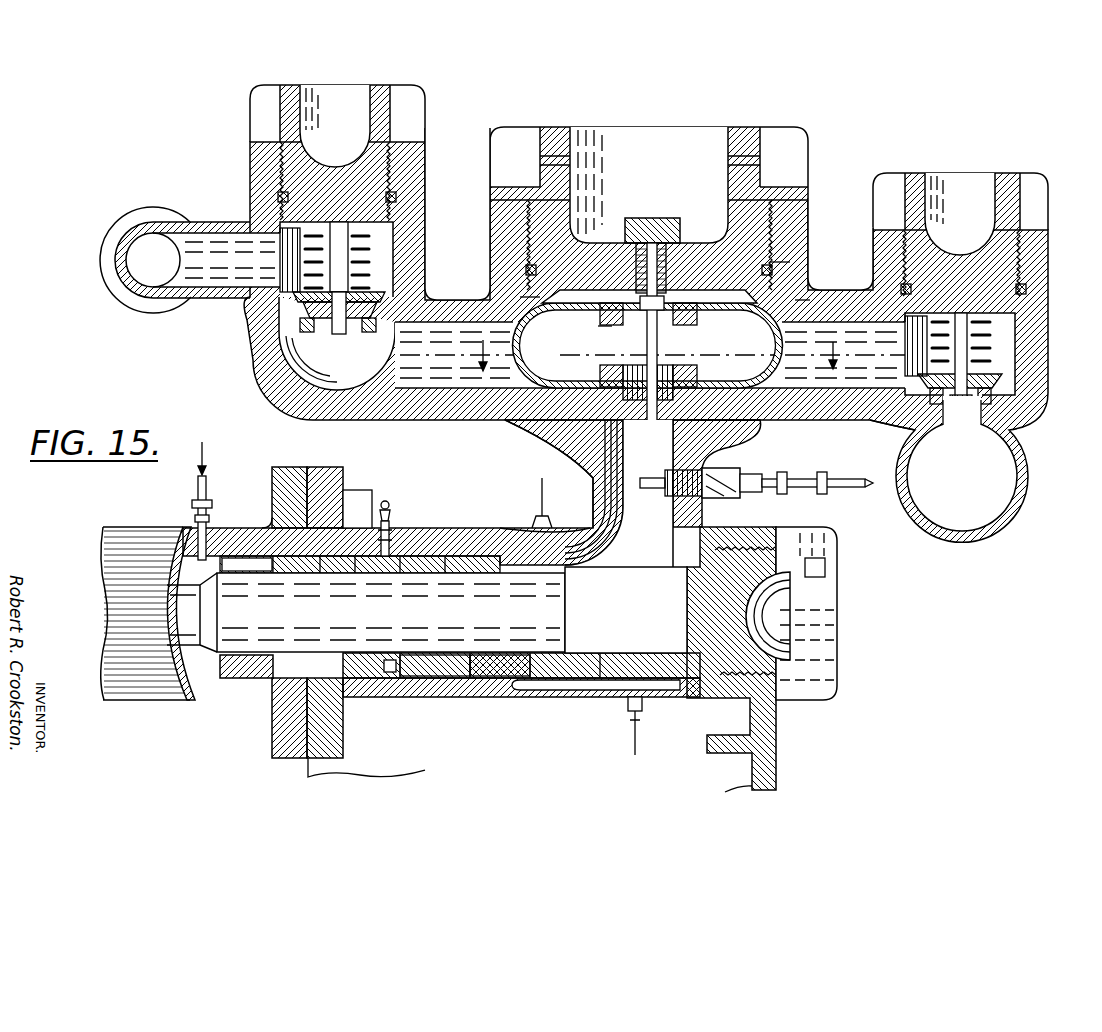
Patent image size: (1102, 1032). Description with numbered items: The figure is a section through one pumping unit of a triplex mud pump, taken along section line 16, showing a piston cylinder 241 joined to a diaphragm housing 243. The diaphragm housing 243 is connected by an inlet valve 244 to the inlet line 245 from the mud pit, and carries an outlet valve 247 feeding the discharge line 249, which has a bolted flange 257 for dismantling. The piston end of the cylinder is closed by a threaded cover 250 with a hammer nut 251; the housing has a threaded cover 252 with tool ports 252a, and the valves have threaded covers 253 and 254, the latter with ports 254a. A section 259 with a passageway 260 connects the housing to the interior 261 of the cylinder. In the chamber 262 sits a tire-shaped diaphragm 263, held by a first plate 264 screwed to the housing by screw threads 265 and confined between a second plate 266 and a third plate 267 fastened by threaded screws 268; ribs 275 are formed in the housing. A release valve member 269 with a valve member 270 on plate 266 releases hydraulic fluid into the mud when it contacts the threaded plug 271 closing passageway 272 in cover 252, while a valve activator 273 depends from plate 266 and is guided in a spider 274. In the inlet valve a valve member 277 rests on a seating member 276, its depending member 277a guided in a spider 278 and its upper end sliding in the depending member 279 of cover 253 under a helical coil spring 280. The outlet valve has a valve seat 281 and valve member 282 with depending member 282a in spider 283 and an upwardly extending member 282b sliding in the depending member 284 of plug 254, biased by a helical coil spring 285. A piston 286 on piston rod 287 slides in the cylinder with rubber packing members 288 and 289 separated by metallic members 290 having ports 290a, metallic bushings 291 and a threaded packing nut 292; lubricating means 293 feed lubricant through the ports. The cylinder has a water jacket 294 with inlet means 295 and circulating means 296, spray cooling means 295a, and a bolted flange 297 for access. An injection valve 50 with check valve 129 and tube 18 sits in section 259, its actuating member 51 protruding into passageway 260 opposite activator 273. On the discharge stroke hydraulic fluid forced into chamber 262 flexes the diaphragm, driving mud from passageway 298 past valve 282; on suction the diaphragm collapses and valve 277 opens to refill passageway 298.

The section line 16— 16 is at (658, 367).
The conduit 18 is at (838, 480).
The injection valve 50 is at (748, 484).
The actuating member 51 is at (653, 480).
The check valve 129 is at (816, 492).
The piston cylinder 241 is at (438, 534).
The diaphragm housing 243 is at (790, 232).
The inlet valve 244 is at (1040, 352).
The inlet line 245 is at (1010, 504).
The outlet valve 247 is at (410, 186).
The discharge line 249 is at (122, 232).
The threaded cover 250 is at (838, 574).
The hammer nut 251 is at (840, 691).
The threaded cover 252 is at (748, 140).
The ports 252a is at (575, 150).
The threaded cover or plug 253 is at (995, 185).
The threaded cover or plug 254 is at (295, 170).
The ports 254a is at (380, 113).
The bolted flange 257 is at (145, 270).
The section 259 is at (700, 503).
The passageway 260 is at (672, 532).
The interior of the piston cylinder 261 is at (644, 629).
The chamber 262 is at (775, 262).
The tire-shaped diaphragm 263 is at (808, 306).
The first plate 264 is at (527, 424).
The screw threads 265 is at (705, 422).
The second plate 266 is at (600, 330).
The third plate 267 is at (522, 298).
The threaded screws 268 is at (683, 296).
The release valve member 269 is at (682, 332).
The valve member 270 is at (648, 330).
The threaded plug 271 is at (654, 226).
The passageway 272 is at (640, 286).
The valve activator 273 is at (720, 432).
The spider 274 is at (590, 452).
The ribs 275 is at (515, 320).
The seating member 276 is at (1000, 392).
The valve member 277 is at (1006, 378).
The downwardly depending member 277a is at (968, 410).
The spider 278 is at (957, 412).
The downwardly depending member 279 is at (1012, 312).
The helical coil spring 280 is at (1010, 330).
The valve seat 281 is at (278, 332).
The valve member 282 is at (292, 305).
The downwardly depending member 282a is at (300, 366).
The upwardly extending member 282b is at (292, 262).
The spider 283 is at (305, 343).
The downwardly depending member 284 is at (214, 222).
The helical coil spring 285 is at (372, 246).
The piston 286 is at (416, 612).
The piston rod 287 is at (183, 632).
The rubber packing member 288 is at (454, 670).
The rubber packing member 289 is at (350, 555).
The metallic members 290 is at (393, 670).
The ports 290a is at (384, 675).
The metallic bushings 291 is at (322, 670).
The threaded packing nut 292 is at (246, 556).
The lubricating means 293 is at (392, 508).
The water jacket 294 is at (560, 530).
The means for introducing water 295 is at (538, 520).
The spray cooling means 295a is at (200, 522).
The means for circulating the cooling fluid 296 is at (613, 689).
The bolted flange 297 is at (330, 478).
The passageway 298 is at (880, 372).